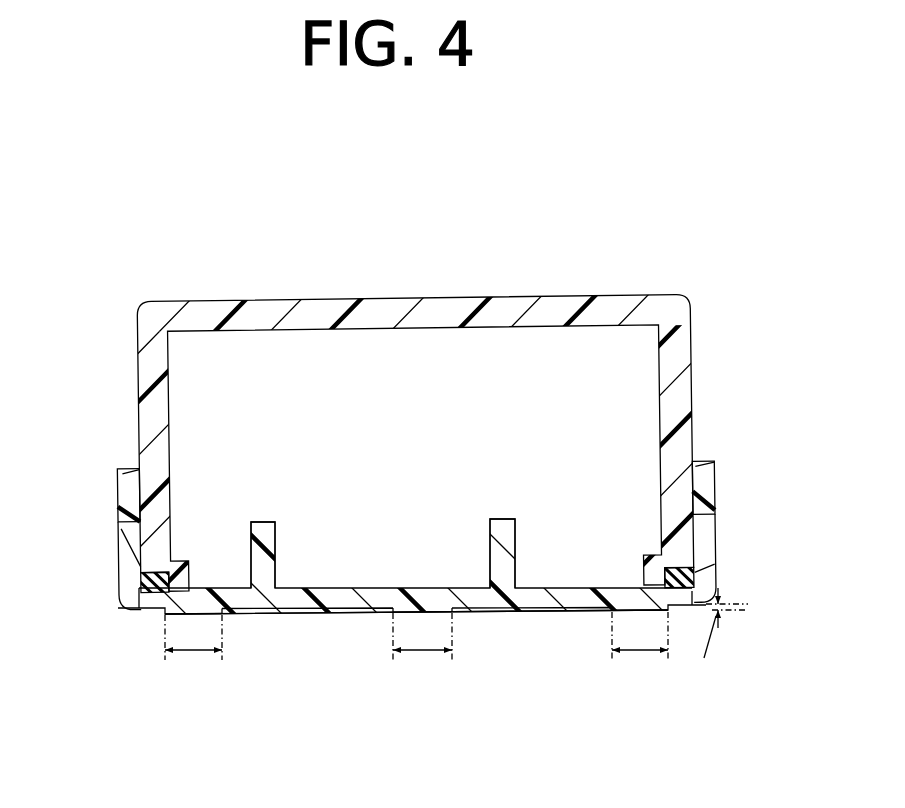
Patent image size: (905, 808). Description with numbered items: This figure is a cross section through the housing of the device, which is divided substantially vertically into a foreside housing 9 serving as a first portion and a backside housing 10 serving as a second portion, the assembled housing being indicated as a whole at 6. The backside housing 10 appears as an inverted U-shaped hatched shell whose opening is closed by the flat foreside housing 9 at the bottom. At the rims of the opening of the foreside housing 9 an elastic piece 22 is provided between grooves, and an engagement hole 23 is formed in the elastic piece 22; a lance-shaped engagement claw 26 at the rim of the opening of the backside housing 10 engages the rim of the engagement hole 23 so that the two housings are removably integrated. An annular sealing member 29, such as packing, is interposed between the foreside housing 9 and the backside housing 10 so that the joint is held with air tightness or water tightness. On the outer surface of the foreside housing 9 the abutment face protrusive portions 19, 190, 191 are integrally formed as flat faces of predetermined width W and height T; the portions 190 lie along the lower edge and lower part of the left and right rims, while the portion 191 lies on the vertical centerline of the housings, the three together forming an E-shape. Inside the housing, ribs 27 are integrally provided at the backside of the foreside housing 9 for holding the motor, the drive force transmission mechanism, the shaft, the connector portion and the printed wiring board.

The battery module case assembly 6 is at (139, 299).
The backside housing 10 is at (219, 298).
The elastic piece 22 is at (117, 481).
The engagement hole 23 is at (121, 529).
The engagement claw 26 is at (137, 542).
The sealing member 29 is at (150, 582).
The foreside housing 9 is at (147, 612).
The rib 27 is at (276, 530).
The abutment face protrusive portion 19 is at (387, 672).
The abutment face protrusive portion 190 is at (212, 612).
The abutment face protrusive portion 191 is at (333, 617).